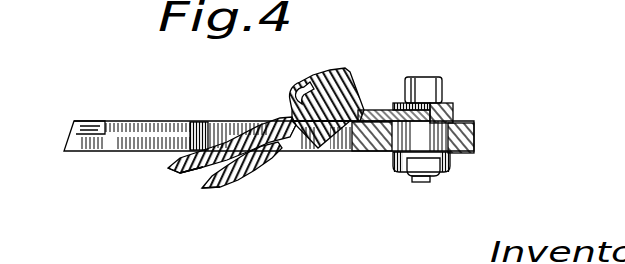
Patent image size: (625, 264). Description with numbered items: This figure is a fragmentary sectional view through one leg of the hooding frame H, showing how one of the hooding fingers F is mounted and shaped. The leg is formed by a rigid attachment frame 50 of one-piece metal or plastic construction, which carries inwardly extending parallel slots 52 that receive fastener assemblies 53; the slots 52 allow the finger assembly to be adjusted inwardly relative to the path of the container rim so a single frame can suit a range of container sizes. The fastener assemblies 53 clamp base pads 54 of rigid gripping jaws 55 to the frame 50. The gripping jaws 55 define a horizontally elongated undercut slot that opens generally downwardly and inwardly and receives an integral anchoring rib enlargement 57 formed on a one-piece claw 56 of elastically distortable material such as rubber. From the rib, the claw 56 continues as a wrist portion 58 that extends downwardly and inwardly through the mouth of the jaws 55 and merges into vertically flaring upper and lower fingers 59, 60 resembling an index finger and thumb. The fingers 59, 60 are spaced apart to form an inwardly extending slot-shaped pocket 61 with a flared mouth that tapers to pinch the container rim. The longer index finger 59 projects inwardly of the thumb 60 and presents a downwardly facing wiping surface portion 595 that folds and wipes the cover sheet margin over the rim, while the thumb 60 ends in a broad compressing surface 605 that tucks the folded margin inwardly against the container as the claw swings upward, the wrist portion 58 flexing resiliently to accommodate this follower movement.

The attachment frame 50 is at (138, 122).
The slots 52 is at (475, 139).
The fastener assemblies 53 is at (444, 87).
The base pads 54 is at (454, 112).
The gripping jaws 55 is at (343, 73).
The claw 56 is at (258, 118).
The anchoring rib enlargement 57 is at (322, 75).
The wrist portion 58 is at (298, 152).
The upper finger 59 is at (208, 121).
The lower finger 60 is at (244, 182).
The pocket 61 is at (193, 178).
The wiping surface portion 595 is at (209, 171).
The compressing surface 605 is at (203, 190).
The hooding fingers F is at (171, 159).
The hooding frame H is at (383, 82).